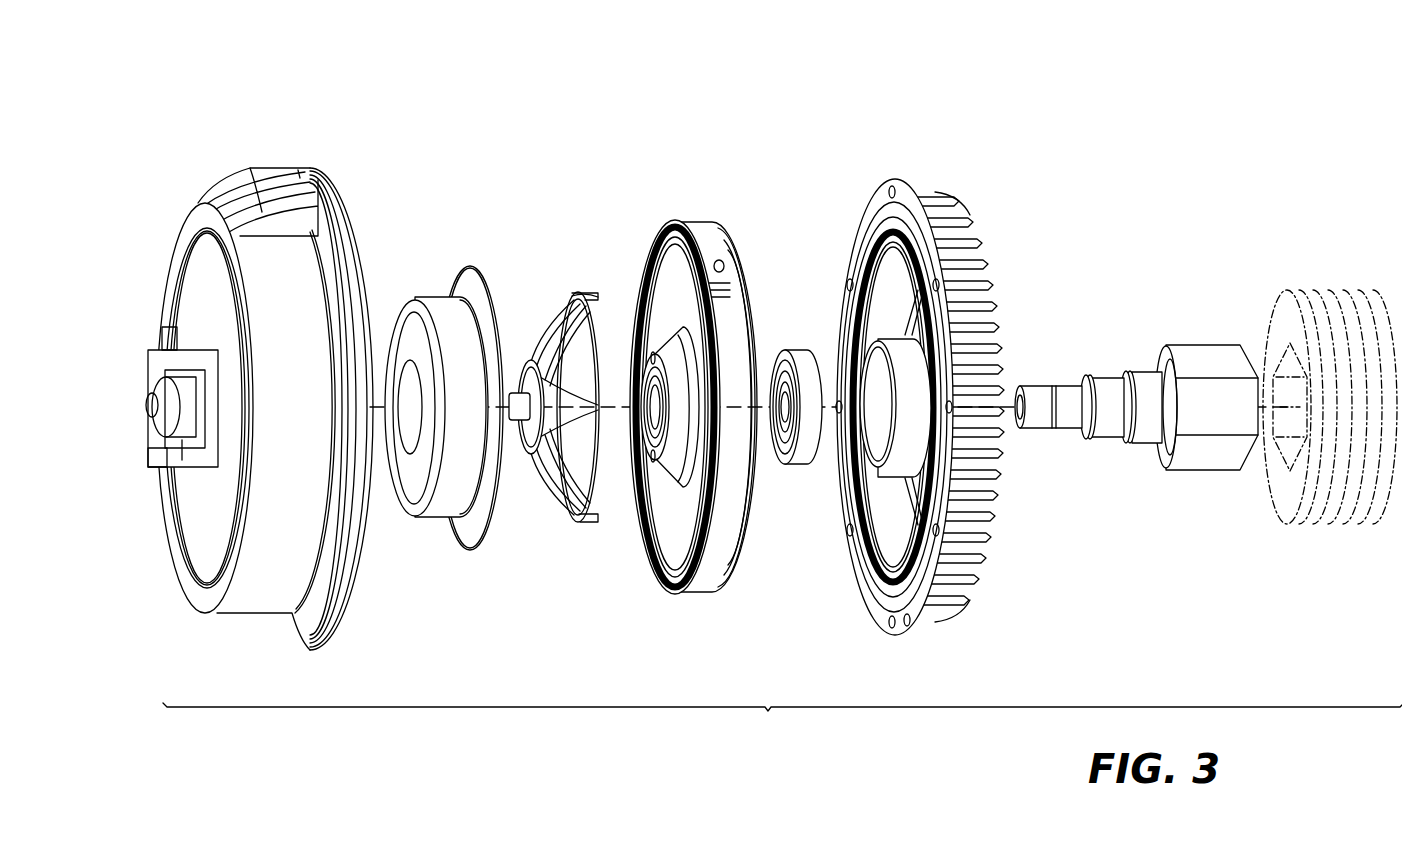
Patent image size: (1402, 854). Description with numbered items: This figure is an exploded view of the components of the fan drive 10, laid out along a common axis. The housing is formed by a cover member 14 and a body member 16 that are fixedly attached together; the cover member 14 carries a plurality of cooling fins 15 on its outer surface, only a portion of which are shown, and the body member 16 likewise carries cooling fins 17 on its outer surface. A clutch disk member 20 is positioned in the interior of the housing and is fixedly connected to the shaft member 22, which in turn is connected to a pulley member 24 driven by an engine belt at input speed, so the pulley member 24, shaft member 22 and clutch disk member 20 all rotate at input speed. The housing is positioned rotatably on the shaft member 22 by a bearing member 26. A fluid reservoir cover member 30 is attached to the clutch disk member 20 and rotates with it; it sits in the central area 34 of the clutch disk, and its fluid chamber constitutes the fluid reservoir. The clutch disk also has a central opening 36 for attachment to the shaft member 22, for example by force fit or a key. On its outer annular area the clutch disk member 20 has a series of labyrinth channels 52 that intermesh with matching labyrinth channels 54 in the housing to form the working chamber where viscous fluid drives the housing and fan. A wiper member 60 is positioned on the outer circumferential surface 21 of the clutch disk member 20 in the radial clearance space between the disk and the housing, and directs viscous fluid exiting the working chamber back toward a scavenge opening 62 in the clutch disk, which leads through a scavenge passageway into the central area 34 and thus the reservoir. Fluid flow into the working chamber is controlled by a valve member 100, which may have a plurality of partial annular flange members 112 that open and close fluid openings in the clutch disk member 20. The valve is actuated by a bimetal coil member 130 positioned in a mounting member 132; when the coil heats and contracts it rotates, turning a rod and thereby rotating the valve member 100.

The fan drive 10 is at (782, 724).
The cover member 14 is at (300, 176).
The cooling fins 15 is at (299, 174).
The body member 16 is at (933, 420).
The cooling fins 17 is at (980, 228).
The clutch disk member 20 is at (688, 415).
The outer circumferential surface 21 is at (717, 538).
The shaft member 22 is at (1142, 440).
The pulley member 24 is at (1310, 527).
The bearing member 26 is at (800, 350).
The fluid reservoir cover member 30 is at (446, 508).
The central area 34 is at (680, 533).
The central opening 36 is at (648, 395).
The labyrinth channels 52 is at (660, 250).
The labyrinth channels 54 is at (885, 568).
The wiper member 60 is at (728, 285).
The scavenge opening 62 is at (722, 263).
The valve member 100 is at (535, 519).
The partial annular flange members 112 is at (584, 295).
The bimetal coil member 130 is at (152, 372).
The mounting member 132 is at (183, 462).